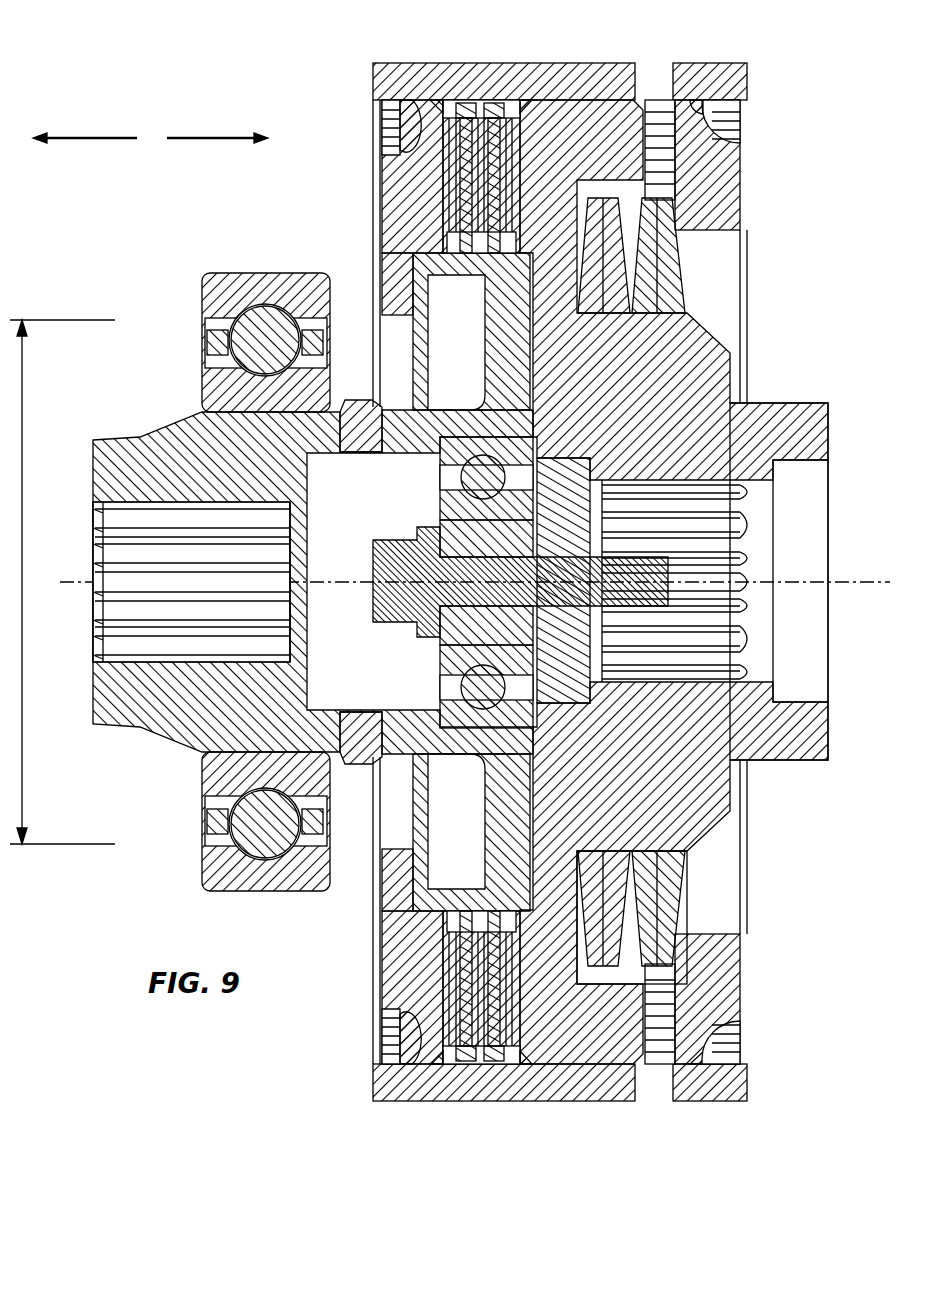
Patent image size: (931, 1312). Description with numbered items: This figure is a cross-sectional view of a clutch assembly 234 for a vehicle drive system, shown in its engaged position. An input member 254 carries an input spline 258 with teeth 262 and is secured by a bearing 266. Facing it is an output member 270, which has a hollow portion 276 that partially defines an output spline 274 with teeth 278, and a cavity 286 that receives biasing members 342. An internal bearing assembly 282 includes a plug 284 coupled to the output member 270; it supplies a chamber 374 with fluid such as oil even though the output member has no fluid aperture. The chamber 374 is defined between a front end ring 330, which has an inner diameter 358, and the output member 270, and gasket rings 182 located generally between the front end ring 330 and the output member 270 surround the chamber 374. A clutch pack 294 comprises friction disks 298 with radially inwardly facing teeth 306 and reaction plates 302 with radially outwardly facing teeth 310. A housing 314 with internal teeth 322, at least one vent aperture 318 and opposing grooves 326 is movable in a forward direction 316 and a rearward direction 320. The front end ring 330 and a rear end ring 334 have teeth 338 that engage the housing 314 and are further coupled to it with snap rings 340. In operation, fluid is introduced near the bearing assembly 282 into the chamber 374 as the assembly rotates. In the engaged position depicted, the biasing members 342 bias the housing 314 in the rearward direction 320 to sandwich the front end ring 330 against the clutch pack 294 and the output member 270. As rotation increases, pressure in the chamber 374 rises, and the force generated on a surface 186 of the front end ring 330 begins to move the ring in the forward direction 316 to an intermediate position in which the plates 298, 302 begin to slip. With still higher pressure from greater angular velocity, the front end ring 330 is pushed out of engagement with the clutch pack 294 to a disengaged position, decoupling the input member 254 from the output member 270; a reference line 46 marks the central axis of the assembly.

The axis 46 is at (840, 582).
The gasket rings 182 is at (433, 100).
The surface 186 is at (383, 280).
The clutch assembly 234 is at (62, 80).
The input member 254 is at (185, 425).
The input spline 258 is at (120, 625).
The teeth 262 is at (432, 228).
The bearing 266 is at (262, 272).
The output member 270 is at (762, 403).
The output spline 274 is at (690, 630).
The hollow portion 276 is at (858, 485).
The teeth 278 is at (612, 100).
The internal bearing assembly 282 is at (388, 628).
The plug 284 is at (425, 527).
The cavity 286 is at (612, 975).
The clutch pack 294 is at (478, 1130).
The friction disks 298 is at (456, 1062).
The reaction plates 302 is at (468, 1062).
The radially inwardly facing teeth 306 is at (410, 262).
The radially outwardly facing teeth 310 is at (490, 100).
The housing 314 is at (376, 97).
The forward direction 316 is at (62, 138).
The vent aperture 318 is at (648, 63).
The rearward direction 320 is at (172, 138).
The internal teeth 322 is at (735, 130).
The opposing grooves 326 is at (385, 1040).
The front end ring 330 is at (378, 962).
The rear end ring 334 is at (748, 180).
The teeth 338 is at (428, 1062).
The snap rings 340 is at (392, 107).
The biasing members 342 is at (665, 900).
The inner diameter 358 is at (22, 453).
The chamber 374 is at (420, 290).